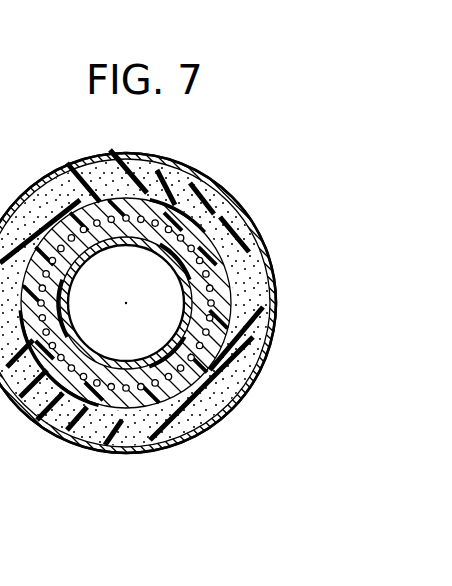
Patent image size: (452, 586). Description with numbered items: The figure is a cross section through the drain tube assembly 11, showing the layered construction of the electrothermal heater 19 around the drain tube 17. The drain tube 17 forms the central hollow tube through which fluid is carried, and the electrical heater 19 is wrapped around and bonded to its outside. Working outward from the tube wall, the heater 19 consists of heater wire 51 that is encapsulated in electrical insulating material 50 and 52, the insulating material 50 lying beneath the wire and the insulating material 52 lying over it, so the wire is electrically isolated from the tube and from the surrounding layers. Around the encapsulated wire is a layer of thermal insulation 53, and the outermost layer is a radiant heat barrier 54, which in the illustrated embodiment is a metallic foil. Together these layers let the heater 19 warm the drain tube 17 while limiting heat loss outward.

The drain tube assembly 11 is at (182, 452).
The drain tube 17 is at (240, 223).
The electrothermal heater 19 is at (54, 436).
The electrical insulating material 50 is at (117, 378).
The heater wire 51 is at (262, 325).
The electrical insulating material 52 is at (227, 397).
The thermal insulation 53 is at (186, 170).
The radiant heat barrier 54 is at (263, 257).